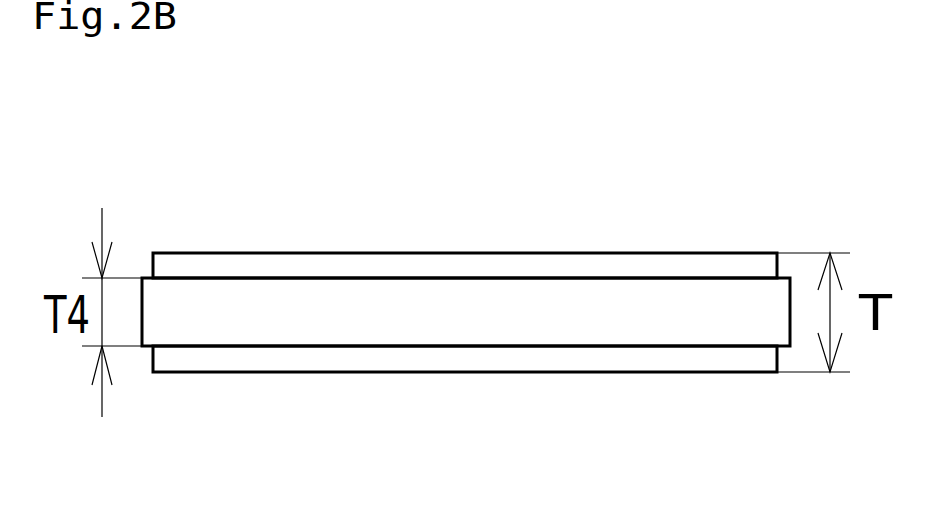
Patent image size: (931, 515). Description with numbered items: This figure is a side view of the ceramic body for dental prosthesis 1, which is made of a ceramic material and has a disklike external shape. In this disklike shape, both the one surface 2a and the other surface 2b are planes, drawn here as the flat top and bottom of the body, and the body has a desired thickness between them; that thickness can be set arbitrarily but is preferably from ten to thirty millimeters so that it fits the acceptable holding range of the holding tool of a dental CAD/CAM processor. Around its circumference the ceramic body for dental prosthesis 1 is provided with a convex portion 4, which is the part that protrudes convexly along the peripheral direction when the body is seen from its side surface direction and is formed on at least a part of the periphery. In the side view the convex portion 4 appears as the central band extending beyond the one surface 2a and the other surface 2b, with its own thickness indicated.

The ceramic body for dental prosthesis 1 is at (255, 190).
The one surface 2a is at (605, 252).
The other surface 2b is at (605, 372).
The convex portion 4 is at (302, 312).